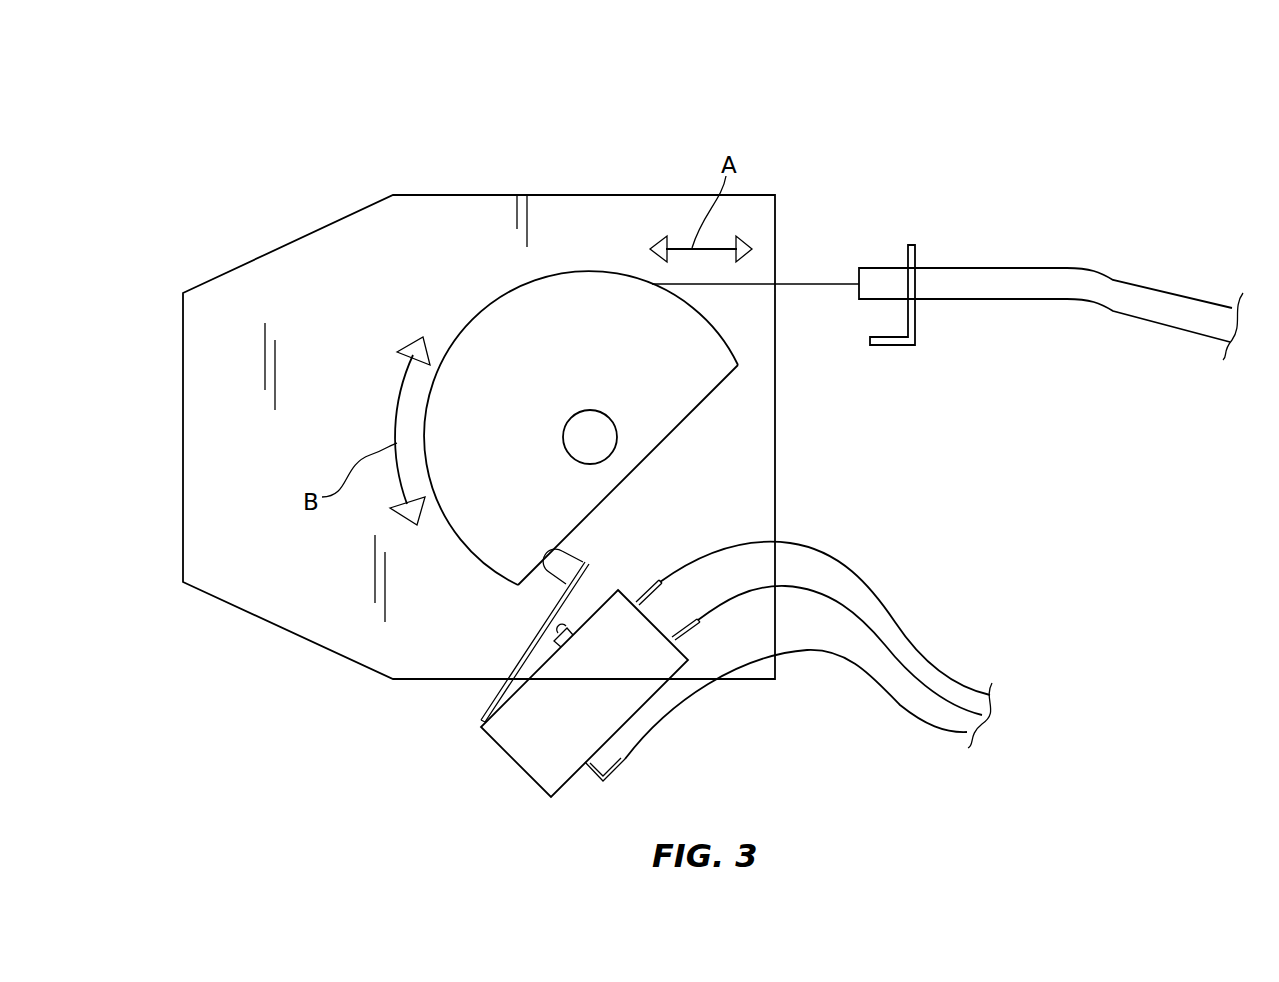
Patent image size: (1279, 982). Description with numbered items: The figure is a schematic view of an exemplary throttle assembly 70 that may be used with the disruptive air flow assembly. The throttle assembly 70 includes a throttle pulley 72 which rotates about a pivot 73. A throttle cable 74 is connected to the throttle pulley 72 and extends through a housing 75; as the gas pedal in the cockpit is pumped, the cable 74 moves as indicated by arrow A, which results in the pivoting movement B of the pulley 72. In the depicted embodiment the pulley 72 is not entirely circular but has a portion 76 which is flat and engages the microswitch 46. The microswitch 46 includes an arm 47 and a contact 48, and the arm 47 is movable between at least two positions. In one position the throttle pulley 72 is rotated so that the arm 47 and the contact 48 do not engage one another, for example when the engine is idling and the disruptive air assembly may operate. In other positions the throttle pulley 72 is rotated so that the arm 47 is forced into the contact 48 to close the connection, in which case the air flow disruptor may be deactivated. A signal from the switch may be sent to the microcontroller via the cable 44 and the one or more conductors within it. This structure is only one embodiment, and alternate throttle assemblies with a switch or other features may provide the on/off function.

The throttle assembly 70 is at (828, 111).
The throttle pulley 72 is at (720, 367).
The pivot 73 is at (598, 446).
The throttle cable 74 is at (812, 283).
The housing 75 is at (1035, 272).
The portion 76 is at (690, 417).
The microswitch 46 is at (520, 761).
The arm 47 is at (590, 565).
The contact 48 is at (590, 597).
The cable 44 is at (960, 640).